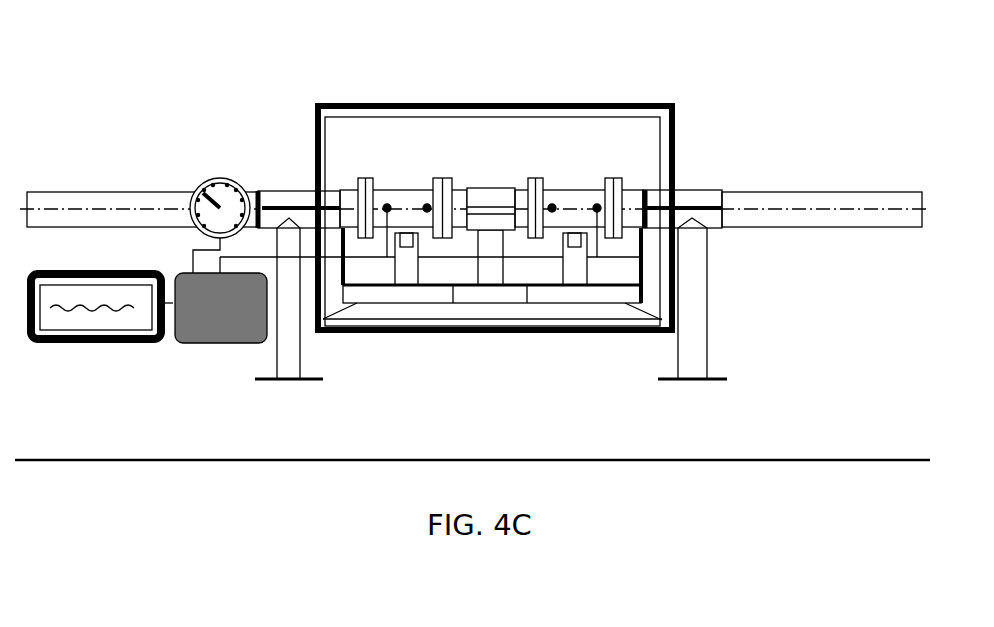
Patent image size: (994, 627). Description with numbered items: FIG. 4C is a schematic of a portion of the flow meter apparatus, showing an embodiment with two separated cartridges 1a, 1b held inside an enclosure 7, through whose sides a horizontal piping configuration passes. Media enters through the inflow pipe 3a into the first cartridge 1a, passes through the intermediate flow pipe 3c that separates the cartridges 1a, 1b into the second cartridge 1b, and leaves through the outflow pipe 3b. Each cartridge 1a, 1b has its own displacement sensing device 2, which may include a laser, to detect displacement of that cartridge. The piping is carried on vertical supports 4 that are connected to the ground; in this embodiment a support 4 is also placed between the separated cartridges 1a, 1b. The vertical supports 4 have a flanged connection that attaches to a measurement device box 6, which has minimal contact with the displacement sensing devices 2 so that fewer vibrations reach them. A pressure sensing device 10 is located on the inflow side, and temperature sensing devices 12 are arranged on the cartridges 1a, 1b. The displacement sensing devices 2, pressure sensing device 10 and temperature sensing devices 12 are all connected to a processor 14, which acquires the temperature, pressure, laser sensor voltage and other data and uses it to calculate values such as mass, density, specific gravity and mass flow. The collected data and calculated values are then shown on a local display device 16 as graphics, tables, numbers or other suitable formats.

The enclosure 7 is at (420, 103).
The inflow pipe 3a is at (117, 195).
The outflow pipe 3b is at (830, 200).
The intermediate flow pipe 3c is at (460, 198).
The pressure sensing device 10 is at (220, 180).
The temperature sensing device 12 is at (427, 208).
The first cartridge 1a is at (418, 190).
The second cartridge 1b is at (565, 190).
The vertical support 4 is at (690, 198).
The displacement sensing device 2 is at (407, 252).
The measurement device box 6 is at (608, 308).
The local display device 16 is at (97, 343).
The processor 14 is at (223, 343).